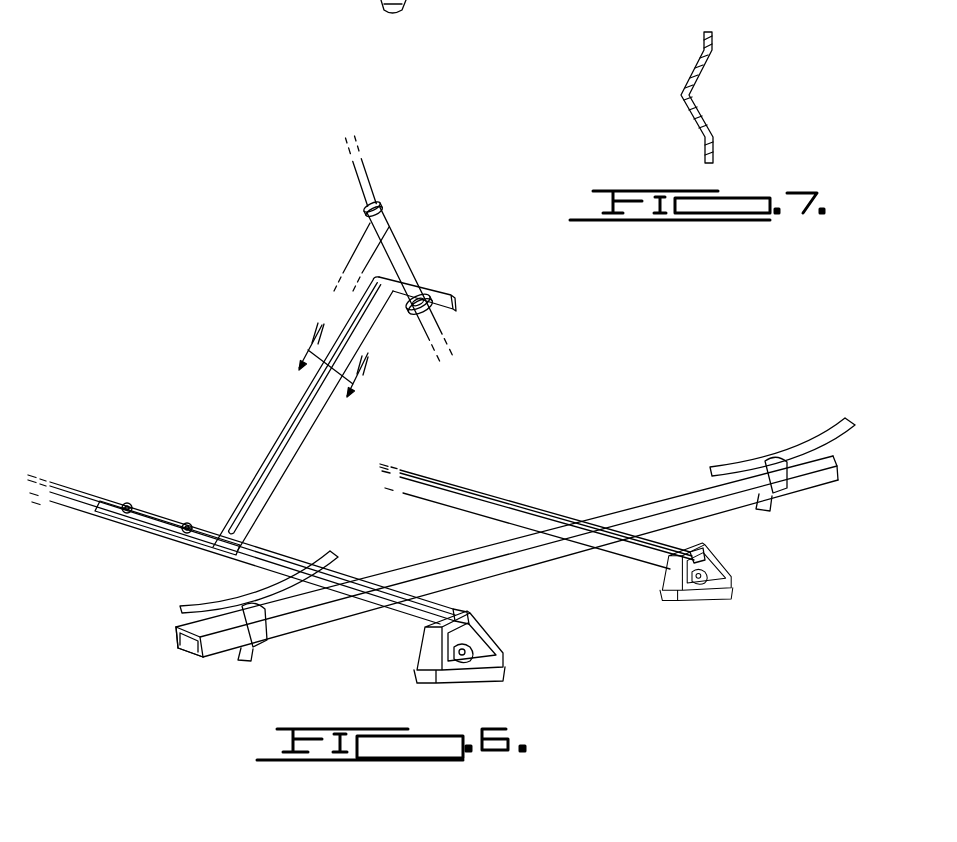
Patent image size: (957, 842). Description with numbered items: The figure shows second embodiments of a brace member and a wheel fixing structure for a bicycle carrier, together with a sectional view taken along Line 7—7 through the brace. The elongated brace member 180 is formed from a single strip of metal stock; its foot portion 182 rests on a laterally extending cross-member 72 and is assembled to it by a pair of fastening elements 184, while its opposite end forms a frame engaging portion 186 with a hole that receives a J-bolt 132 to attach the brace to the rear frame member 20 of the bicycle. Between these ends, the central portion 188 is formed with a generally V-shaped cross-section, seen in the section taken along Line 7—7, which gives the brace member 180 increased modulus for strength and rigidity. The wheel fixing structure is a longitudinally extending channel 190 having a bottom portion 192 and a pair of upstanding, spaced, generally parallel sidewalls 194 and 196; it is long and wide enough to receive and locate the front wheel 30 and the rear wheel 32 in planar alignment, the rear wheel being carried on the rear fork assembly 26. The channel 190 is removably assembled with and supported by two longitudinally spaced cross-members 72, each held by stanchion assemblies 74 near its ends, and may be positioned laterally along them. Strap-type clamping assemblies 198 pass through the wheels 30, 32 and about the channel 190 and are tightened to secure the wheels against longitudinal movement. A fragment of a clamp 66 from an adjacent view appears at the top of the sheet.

In FIG. 6, the rear frame member 20 is at (401, 262).
In FIG. 6, the rear fork assembly 26 is at (360, 242).
In FIG. 6, the front wheel 30 is at (835, 432).
In FIG. 6, the rear wheel 32 is at (181, 606).
In FIG. 6, the clamp 66 is at (404, 12).
In FIG. 6, the cross-member 72 is at (66, 483).
In FIG. 6, the stanchion assembly 74 is at (476, 624).
In FIG. 6, the J-bolt 132 is at (437, 312).
In FIG. 6, the brace member 180 is at (284, 409).
In FIG. 6, the foot portion 182 is at (157, 511).
In FIG. 6, the fastening elements 184 is at (127, 503).
In FIG. 6, the frame engaging portion 186 is at (446, 291).
In FIG. 6, the central portion 188 is at (312, 418).
In FIG. 7, the central portion 188 is at (692, 72).
In FIG. 6, the channel 190 is at (636, 505).
In FIG. 6, the bottom portion 192 is at (188, 651).
In FIG. 6, the sidewall 194 is at (176, 637).
In FIG. 6, the sidewall 196 is at (218, 650).
In FIG. 6, the clamping assemblies 198 is at (268, 628).
In FIG. 6, the Line 7— 7 is at (331, 365).